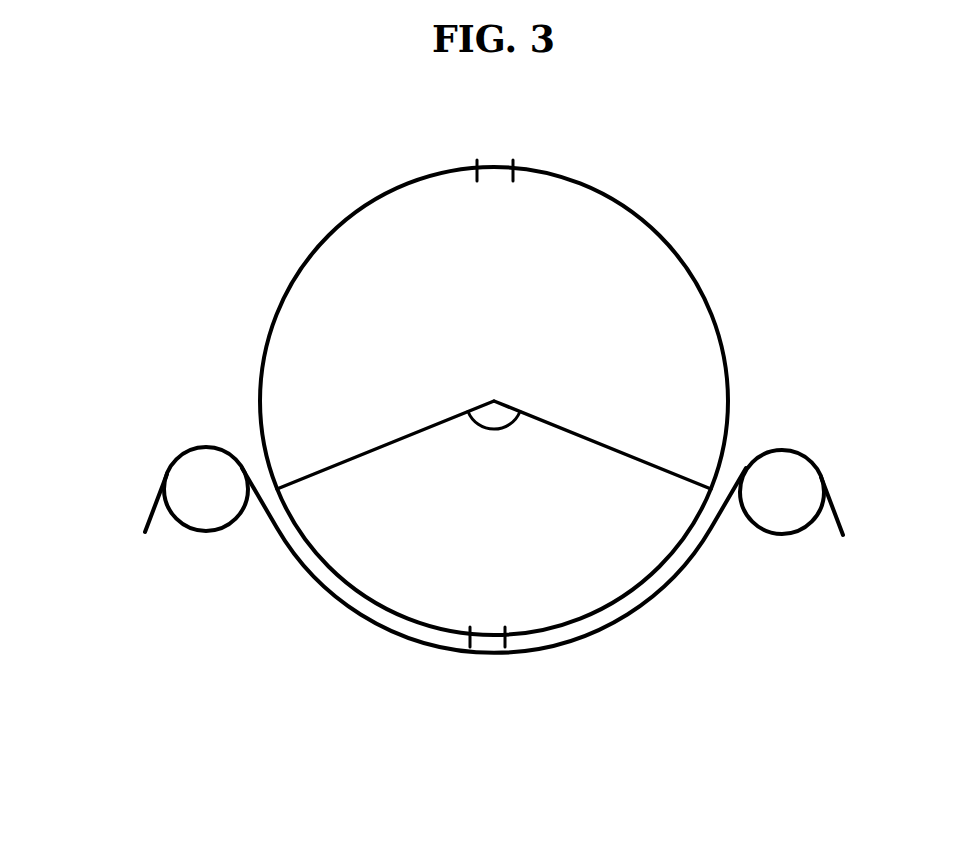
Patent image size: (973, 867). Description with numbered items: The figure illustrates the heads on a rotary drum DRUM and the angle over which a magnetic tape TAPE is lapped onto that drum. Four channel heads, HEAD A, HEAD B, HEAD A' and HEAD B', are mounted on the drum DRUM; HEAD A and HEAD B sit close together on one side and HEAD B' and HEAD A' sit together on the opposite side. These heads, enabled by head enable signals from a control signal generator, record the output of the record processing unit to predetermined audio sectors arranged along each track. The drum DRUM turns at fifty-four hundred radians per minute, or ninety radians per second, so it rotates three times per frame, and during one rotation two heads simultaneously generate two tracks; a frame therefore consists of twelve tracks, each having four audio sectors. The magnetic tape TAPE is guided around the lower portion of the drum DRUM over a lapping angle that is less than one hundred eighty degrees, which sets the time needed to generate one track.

The drum DRUM is at (707, 352).
The magnetic tape TAPE is at (840, 512).
The channel head A HEAD A is at (452, 146).
The channel head B HEAD B is at (542, 146).
The channel head A' HEAD A' is at (539, 666).
The channel head B' HEAD B' is at (441, 666).